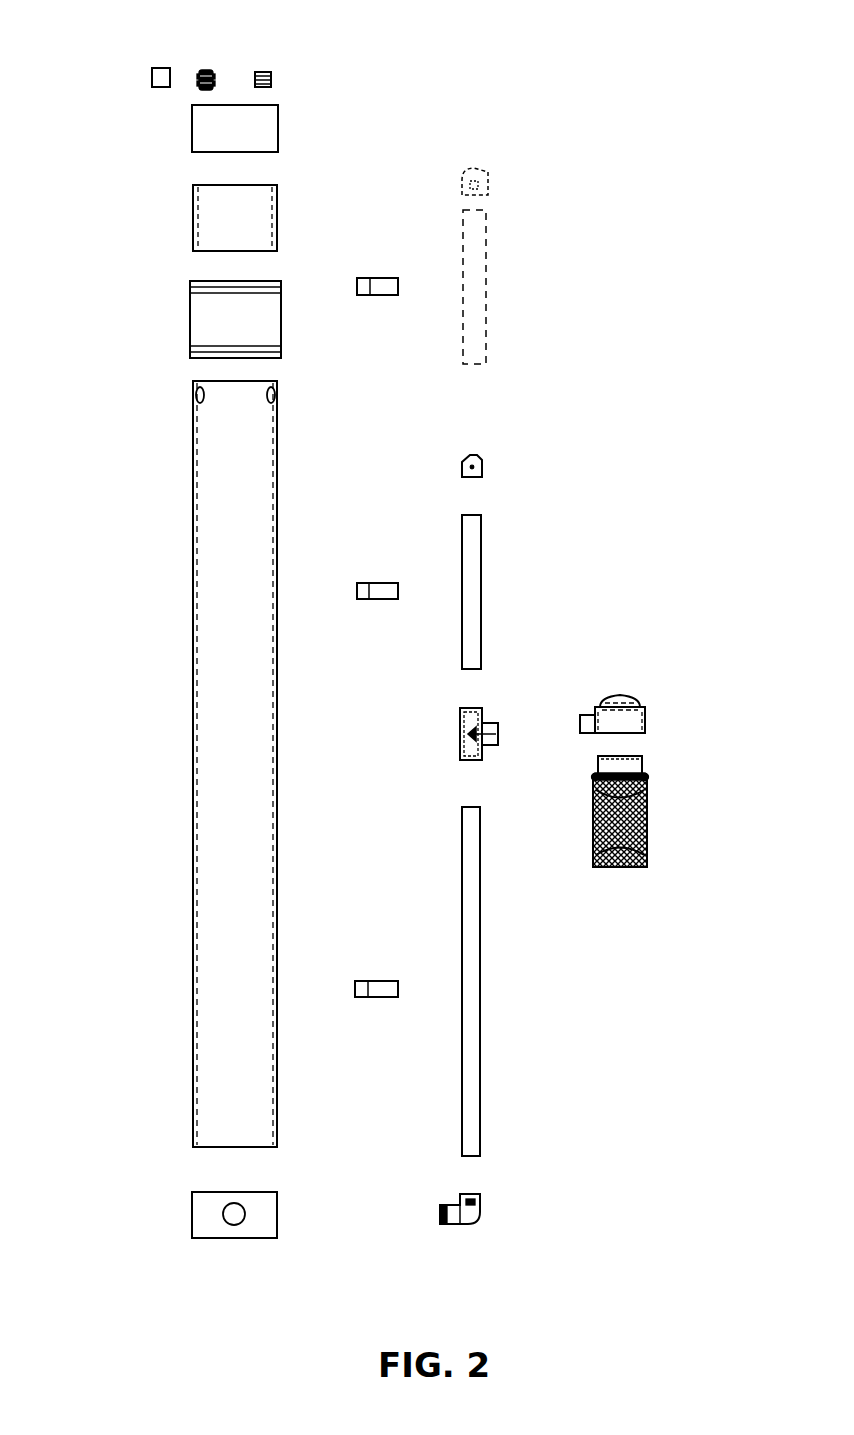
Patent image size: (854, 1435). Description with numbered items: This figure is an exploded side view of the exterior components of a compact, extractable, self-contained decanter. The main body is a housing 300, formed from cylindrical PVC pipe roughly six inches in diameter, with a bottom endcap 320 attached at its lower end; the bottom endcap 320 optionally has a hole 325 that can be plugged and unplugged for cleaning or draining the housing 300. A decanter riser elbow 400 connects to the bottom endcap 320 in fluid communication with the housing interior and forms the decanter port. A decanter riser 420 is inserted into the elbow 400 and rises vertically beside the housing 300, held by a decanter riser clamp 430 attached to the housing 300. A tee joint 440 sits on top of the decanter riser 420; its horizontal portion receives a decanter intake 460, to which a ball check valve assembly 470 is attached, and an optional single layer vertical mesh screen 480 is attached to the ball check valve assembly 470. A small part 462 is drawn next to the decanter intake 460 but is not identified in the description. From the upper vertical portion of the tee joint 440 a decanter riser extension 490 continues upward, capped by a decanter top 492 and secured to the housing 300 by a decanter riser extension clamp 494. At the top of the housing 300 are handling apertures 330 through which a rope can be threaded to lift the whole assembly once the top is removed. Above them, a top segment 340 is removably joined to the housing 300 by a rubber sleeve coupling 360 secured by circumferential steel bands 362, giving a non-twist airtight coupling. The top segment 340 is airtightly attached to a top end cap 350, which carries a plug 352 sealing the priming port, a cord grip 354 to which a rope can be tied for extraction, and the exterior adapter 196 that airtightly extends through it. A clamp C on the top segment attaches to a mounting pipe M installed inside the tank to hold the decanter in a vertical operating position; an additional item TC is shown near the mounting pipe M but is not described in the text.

The exterior adapter 196 is at (207, 68).
The housing 300 is at (207, 840).
The bottom endcap 320 is at (191, 1215).
The hole 325 is at (233, 1218).
The handling apertures 330 is at (197, 394).
The top segment 340 is at (205, 215).
The top end cap 350 is at (204, 130).
The plug 352 is at (267, 70).
The cord grip 354 is at (158, 78).
The rubber sleeve coupling 360 is at (200, 322).
The circumferential steel bands 362 is at (213, 281).
The decanter riser elbow 400 is at (477, 1222).
The decanter riser 420 is at (482, 1087).
The decanter riser clamp 430 is at (378, 981).
The tee joint 440 is at (462, 727).
The decanter intake 460 is at (646, 720).
The cap tab 462 is at (585, 715).
The ball check valve assembly 470 is at (634, 764).
The single layer vertical mesh screen 480 is at (647, 832).
The decanter riser extension 490 is at (482, 585).
The decanter top 492 is at (463, 460).
The decanter riser extension clamp 494 is at (382, 583).
The clamp C is at (377, 278).
The thermocouple TC is at (487, 183).
The mounting pipe M is at (487, 302).